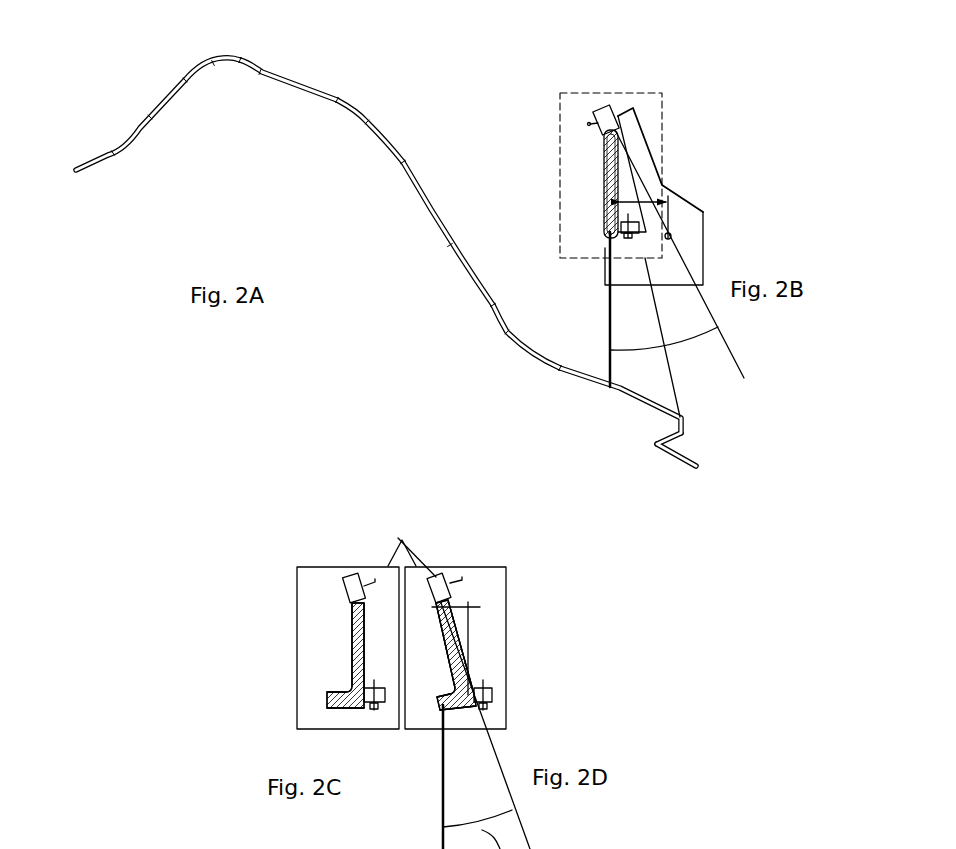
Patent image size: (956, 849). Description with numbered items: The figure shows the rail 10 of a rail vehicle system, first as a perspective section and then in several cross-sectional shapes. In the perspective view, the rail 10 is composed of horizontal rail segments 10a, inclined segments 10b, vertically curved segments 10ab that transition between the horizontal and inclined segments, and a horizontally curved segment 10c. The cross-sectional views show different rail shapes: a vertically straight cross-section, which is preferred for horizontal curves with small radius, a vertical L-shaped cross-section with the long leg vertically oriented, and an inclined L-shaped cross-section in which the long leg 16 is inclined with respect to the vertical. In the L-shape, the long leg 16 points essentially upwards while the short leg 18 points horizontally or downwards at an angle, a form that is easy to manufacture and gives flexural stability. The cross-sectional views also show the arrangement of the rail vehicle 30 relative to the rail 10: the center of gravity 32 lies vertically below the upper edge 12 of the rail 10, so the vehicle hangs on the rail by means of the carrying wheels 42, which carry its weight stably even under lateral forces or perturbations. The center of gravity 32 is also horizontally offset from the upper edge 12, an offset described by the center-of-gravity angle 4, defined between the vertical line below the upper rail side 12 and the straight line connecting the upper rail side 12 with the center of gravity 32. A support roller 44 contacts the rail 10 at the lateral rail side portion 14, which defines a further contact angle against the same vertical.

In FIG. 2A, the rail 10 is at (367, 281).
In FIG. 2C, the rail 10 is at (350, 668).
In FIG. 2D, the rail 10 is at (460, 628).
In FIG. 2A, the horizontal rail segment 10a is at (259, 75).
In FIG. 2A, the inclined rail segment 10b is at (150, 122).
In FIG. 2A, the vertically curved segment 10ab is at (212, 66).
In FIG. 2A, the horizontally curved segment 10c is at (652, 440).
In FIG. 2B, the upper edge of the rail 12 is at (598, 139).
In FIG. 2C, the upper edge of the rail 12 is at (349, 608).
In FIG. 2D, the upper edge of the rail 12 is at (465, 604).
In FIG. 2B, the lateral rail side portion 14 is at (623, 239).
In FIG. 2C, the lateral rail side portion 14 is at (371, 712).
In FIG. 2D, the lateral rail side portion 14 is at (471, 713).
In FIG. 2C, the long leg 16 is at (357, 640).
In FIG. 2D, the long leg 16 is at (464, 650).
In FIG. 2C, the short leg 18 is at (329, 706).
In FIG. 2D, the short leg 18 is at (444, 710).
In FIG. 2B, the rail vehicle 30 is at (652, 142).
In FIG. 2B, the center of gravity 32 is at (674, 234).
In FIG. 2B, the carrying wheels 42 is at (603, 110).
In FIG. 2C, the carrying wheels 42 is at (347, 577).
In FIG. 2D, the carrying wheels 42 is at (440, 577).
In FIG. 2B, the support roller 44 is at (616, 212).
In FIG. 2C, the support roller 44 is at (367, 693).
In FIG. 2D, the support roller 44 is at (492, 694).
In FIG. 2B, the center-of-gravity angle 4 is at (683, 345).